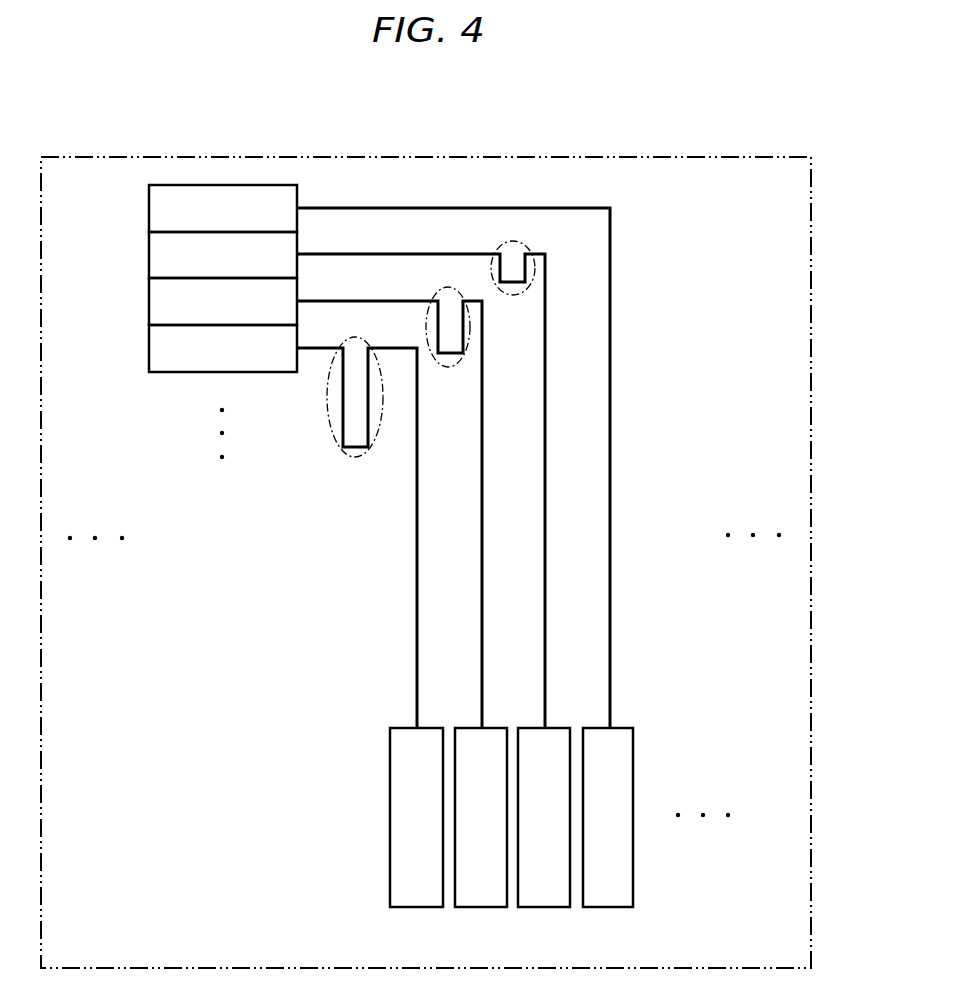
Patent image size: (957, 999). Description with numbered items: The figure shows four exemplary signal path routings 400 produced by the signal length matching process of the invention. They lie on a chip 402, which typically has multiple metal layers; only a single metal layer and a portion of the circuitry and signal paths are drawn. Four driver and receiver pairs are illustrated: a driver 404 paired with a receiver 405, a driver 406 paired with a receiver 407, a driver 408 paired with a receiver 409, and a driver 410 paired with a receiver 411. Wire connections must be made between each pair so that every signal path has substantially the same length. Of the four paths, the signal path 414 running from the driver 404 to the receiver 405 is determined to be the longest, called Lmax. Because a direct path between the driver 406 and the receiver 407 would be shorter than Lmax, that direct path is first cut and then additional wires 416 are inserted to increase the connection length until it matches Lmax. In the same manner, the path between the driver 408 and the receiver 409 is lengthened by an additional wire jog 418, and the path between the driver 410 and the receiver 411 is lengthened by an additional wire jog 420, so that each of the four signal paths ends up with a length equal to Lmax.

The signal path routings 400 is at (742, 88).
The chip 402 is at (765, 157).
The driver 404 is at (149, 209).
The driver 406 is at (149, 255).
The driver 408 is at (149, 301).
The driver 410 is at (149, 348).
The receiver 405 is at (606, 908).
The receiver 407 is at (542, 908).
The receiver 409 is at (478, 908).
The receiver 411 is at (413, 908).
The signal path 414 is at (611, 363).
The additional wires 416 is at (529, 251).
The additional wire jog 418 is at (454, 365).
The additional wire jog 420 is at (350, 455).